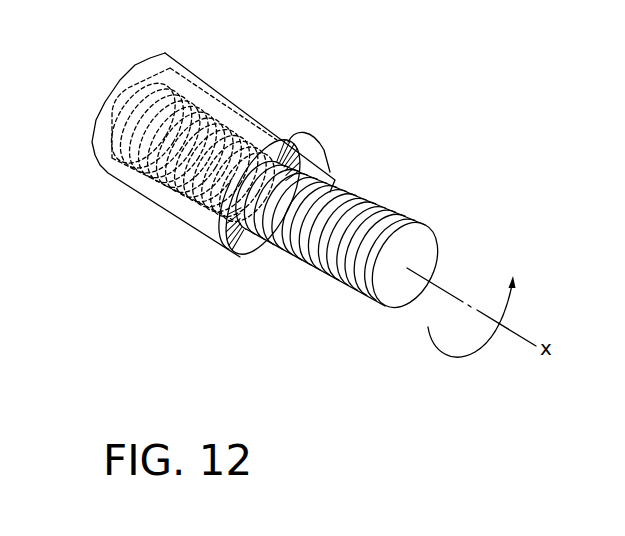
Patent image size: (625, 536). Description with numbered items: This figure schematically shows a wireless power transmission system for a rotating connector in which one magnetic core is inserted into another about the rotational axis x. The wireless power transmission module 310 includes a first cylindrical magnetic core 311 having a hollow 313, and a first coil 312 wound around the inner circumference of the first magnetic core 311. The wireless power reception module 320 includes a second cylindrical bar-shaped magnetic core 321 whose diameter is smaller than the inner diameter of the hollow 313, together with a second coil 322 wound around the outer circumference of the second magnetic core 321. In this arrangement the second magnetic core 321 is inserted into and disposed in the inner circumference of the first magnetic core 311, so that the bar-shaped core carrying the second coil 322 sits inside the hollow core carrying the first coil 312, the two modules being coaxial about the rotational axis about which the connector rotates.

The wireless power transmission module 310 is at (228, 74).
The first cylindrical magnetic core 311 is at (248, 247).
The first coil 312 is at (198, 211).
The hollow 313 is at (327, 165).
The wireless power reception module 320 is at (405, 197).
The second cylindrical bar-shaped magnetic core 321 is at (413, 224).
The second coil 322 is at (358, 199).